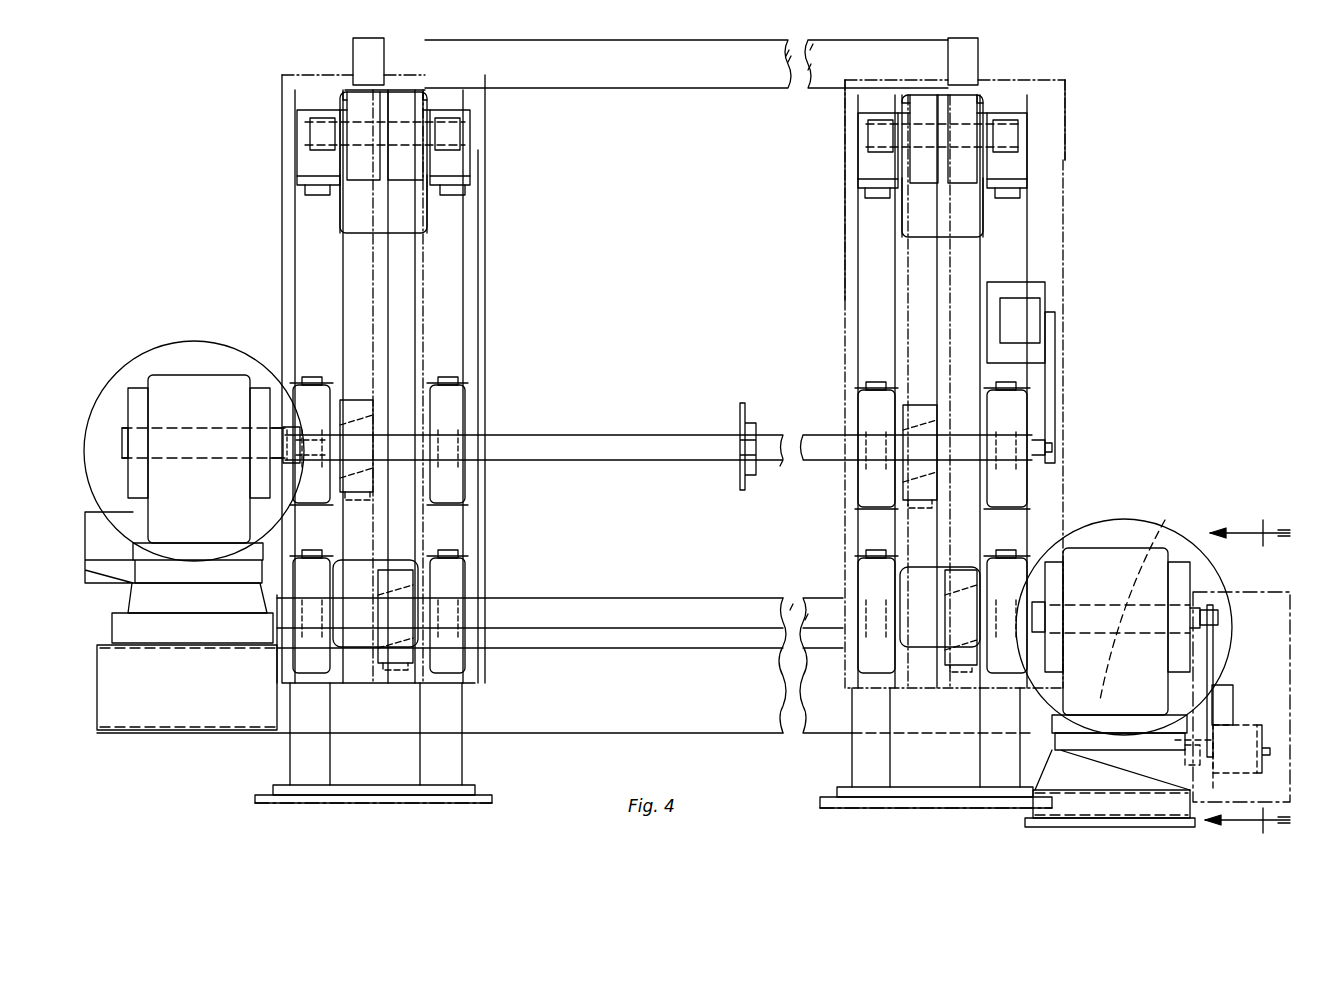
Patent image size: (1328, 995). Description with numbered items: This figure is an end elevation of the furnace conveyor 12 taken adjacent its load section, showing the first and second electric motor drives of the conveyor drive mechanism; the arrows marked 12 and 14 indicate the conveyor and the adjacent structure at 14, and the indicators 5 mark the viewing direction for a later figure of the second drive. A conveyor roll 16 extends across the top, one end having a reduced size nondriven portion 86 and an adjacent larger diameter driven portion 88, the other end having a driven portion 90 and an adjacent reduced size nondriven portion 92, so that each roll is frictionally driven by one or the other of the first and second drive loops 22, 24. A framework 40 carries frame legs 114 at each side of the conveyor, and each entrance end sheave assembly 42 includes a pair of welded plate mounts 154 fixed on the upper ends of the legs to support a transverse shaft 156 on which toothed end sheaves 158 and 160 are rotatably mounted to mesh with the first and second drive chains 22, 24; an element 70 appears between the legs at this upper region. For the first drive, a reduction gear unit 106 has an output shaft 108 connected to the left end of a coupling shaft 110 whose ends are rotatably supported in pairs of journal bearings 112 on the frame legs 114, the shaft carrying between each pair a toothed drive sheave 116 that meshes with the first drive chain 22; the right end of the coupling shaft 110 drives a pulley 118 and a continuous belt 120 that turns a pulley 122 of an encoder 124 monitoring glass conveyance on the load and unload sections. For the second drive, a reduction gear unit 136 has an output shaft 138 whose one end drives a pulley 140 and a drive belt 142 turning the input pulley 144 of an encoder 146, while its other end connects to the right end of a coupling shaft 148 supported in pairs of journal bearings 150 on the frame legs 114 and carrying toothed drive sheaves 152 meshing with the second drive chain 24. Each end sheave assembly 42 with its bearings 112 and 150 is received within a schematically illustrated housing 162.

The section line 5- 5 is at (1241, 676).
The conveyor 12 is at (1005, 52).
The support column assembly 14 is at (1075, 72).
The conveyor roll 16 is at (798, 88).
The first drive loop 22 is at (330, 272).
The second drive loop 24 is at (415, 258).
The framework 40 is at (290, 765).
The entrance end sheave assembly 42 is at (425, 178).
The carriage frame 70 is at (355, 232).
The reduced size nondriven portion 86 is at (965, 72).
The driven portion 88 is at (938, 60).
The driven portion 90 is at (362, 70).
The reduced size nondriven portion 92 is at (398, 48).
The reduction gear unit 106 is at (195, 380).
The output shaft 108 is at (298, 445).
The coupling shaft 110 is at (605, 440).
The journal bearings 112 is at (329, 405).
The frame legs 114 is at (302, 712).
The toothed drive sheave 116 is at (373, 440).
The pulley 118 is at (1045, 447).
The continuous belt 120 is at (1055, 378).
The pulley 122 is at (1050, 330).
The encoder 124 is at (1040, 300).
The reduction gear unit 136 is at (1118, 548).
The output shaft 138 is at (1182, 525).
The pulley 140 is at (1213, 607).
The drive belt 142 is at (1215, 637).
The input pulley 144 is at (1230, 700).
The encoder 146 is at (1235, 740).
The coupling shaft 148 is at (598, 598).
The journal bearings 150 is at (320, 575).
The toothed drive sheave 152 is at (408, 567).
The welded plate mounts 154 is at (305, 115).
The transverse shaft 156 is at (328, 135).
The toothed end sheave 158 is at (345, 93).
The toothed end sheave 160 is at (425, 95).
The housing 162 is at (485, 165).